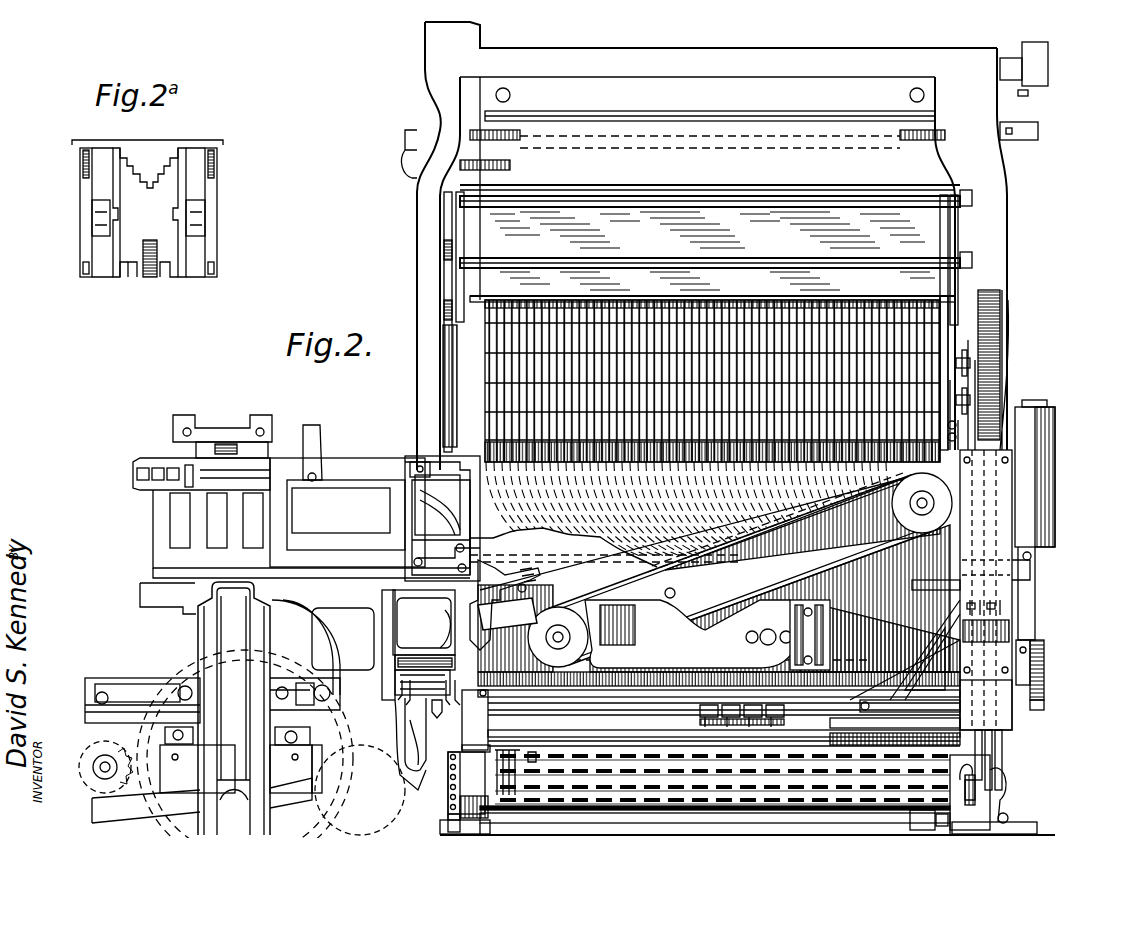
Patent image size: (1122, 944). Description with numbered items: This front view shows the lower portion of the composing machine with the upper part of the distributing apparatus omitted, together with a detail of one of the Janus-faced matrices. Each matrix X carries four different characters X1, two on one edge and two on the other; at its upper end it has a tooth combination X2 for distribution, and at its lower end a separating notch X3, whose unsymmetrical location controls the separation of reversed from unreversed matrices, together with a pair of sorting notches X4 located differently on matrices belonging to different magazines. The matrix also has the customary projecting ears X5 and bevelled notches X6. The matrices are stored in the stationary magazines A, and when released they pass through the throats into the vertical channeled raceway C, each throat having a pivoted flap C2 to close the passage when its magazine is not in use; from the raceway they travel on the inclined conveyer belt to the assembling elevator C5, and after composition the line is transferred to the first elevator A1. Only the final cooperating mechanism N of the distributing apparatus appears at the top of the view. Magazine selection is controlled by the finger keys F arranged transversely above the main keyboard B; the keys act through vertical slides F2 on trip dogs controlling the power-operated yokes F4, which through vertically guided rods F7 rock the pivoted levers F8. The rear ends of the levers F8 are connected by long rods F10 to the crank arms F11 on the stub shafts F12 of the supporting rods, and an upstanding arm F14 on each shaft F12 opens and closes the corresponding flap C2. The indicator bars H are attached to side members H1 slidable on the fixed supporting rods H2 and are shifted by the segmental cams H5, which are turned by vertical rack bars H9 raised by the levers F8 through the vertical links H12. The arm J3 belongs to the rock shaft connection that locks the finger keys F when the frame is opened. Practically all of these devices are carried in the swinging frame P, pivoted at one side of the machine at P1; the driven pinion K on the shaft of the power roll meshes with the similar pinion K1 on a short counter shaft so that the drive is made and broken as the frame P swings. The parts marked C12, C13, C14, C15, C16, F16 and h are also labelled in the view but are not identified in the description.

In FIG. 2, the stationary magazine A is at (710, 243).
In FIG. 2, the first elevator A1 is at (168, 592).
In FIG. 2, the distributing mechanism N is at (710, 173).
In FIG. 2, the vertical channeled raceway C is at (712, 345).
In FIG. 2, the pivoted flap C2 is at (780, 345).
In FIG. 2, the assembling elevator C5 is at (490, 558).
In FIG. 2, the link C12 is at (1025, 585).
In FIG. 2, the lower pulley C13 is at (640, 582).
In FIG. 2, the upper pulley C14 is at (890, 540).
In FIG. 2, the lever C15 is at (428, 752).
In FIG. 2, the pivot pin C16 is at (452, 704).
In FIG. 2, the swinging frame P is at (985, 320).
In FIG. 2, the pivot P1 is at (1048, 475).
In FIG. 2, the finger key F is at (702, 720).
In FIG. 2, the vertical slide F2 is at (1010, 712).
In FIG. 2, the power-operated yoke F4 is at (1000, 642).
In FIG. 2, the vertically guided rod F7 is at (930, 690).
In FIG. 2, the pivoted lever F8 is at (1003, 615).
In FIG. 2, the long rod F10 is at (985, 425).
In FIG. 2, the crank arm F11 is at (995, 365).
In FIG. 2, the stub shaft F12 is at (990, 335).
In FIG. 2, the upstanding arm F14 is at (960, 400).
In FIG. 2, the screw F16 is at (960, 362).
In FIG. 2, the arm of rock shaft J3 is at (1032, 652).
In FIG. 2, the driven pinion K is at (1044, 665).
In FIG. 2, the pinion K1 is at (1044, 700).
In FIG. 2, the indicator bar H is at (878, 772).
In FIG. 2, the side member H1 is at (945, 806).
In FIG. 2, the fixed supporting rod H2 is at (447, 818).
In FIG. 2, the segmental peripheral cam H5 is at (1005, 818).
In FIG. 2, the vertical rack bar H9 is at (990, 762).
In FIG. 2, the vertical link H12 is at (990, 737).
In FIG. 2, the spring h is at (510, 758).
In FIG. 2, the main keyboard B is at (580, 772).
In FIG. 2A, the matrix X is at (139, 217).
In FIG. 2A, the character X1 is at (114, 214).
In FIG. 2A, the tooth combination X2 is at (146, 178).
In FIG. 2A, the separating notch X3 is at (150, 277).
In FIG. 2A, the sorting notch X4 is at (122, 270).
In FIG. 2A, the projecting ear X5 is at (80, 160).
In FIG. 2A, the bevelled notch X6 is at (132, 277).